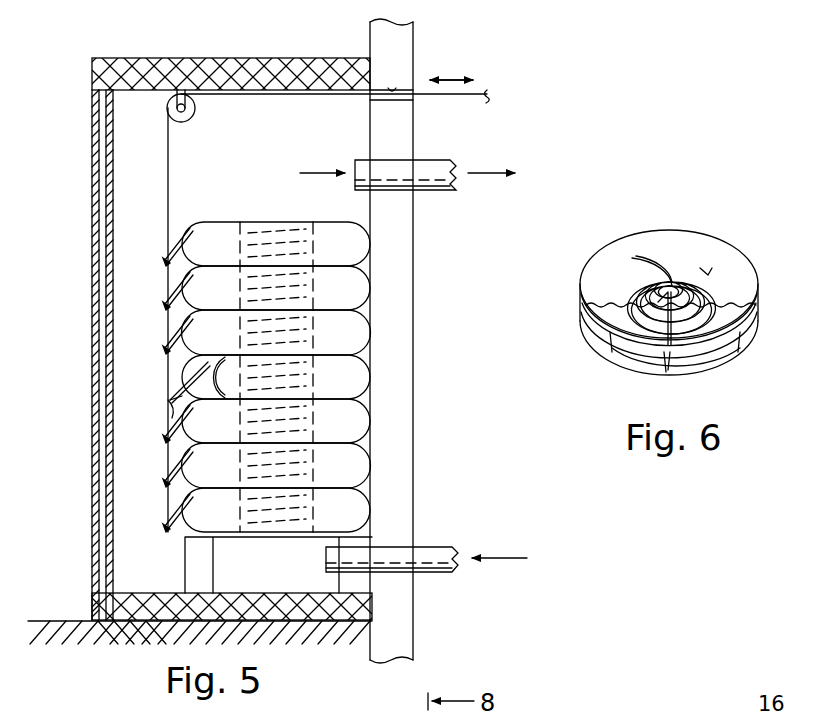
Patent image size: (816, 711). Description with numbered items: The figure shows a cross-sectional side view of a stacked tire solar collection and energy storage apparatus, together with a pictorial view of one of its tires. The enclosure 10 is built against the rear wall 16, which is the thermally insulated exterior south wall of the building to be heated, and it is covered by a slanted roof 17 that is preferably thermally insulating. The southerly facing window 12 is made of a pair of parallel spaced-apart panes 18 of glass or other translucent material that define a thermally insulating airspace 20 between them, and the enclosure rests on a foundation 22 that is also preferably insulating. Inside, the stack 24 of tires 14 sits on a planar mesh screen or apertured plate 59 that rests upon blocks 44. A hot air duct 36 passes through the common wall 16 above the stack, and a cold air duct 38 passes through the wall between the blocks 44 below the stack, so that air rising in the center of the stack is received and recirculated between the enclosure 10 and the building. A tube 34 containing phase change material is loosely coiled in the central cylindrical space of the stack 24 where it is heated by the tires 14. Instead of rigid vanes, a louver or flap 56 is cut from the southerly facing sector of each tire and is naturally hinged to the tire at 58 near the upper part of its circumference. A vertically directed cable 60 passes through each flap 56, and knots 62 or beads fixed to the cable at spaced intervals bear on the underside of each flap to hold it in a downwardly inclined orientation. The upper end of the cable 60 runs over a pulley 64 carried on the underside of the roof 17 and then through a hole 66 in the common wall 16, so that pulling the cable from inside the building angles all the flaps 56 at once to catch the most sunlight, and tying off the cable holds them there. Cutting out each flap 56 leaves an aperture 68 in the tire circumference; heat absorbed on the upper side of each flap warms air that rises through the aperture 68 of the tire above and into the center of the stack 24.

In FIG. 5, the enclosure 10 is at (200, 44).
In FIG. 5, the southerly facing window 12 is at (90, 298).
In FIG. 5, the tires 14 is at (371, 420).
In FIG. 6, the tires 14 is at (617, 252).
In FIG. 5, the rear wall 16 is at (394, 310).
In FIG. 5, the roof 17 is at (292, 72).
In FIG. 5, the panes 18 is at (110, 372).
In FIG. 5, the airspace 20 is at (104, 458).
In FIG. 5, the foundation 22 is at (112, 606).
In FIG. 5, the stack 24 is at (223, 218).
In FIG. 5, the tube 34 is at (276, 228).
In FIG. 6, the tube 34 is at (665, 270).
In FIG. 5, the hot air duct 36 is at (430, 168).
In FIG. 5, the cold air duct 38 is at (430, 553).
In FIG. 5, the blocks 44 is at (190, 571).
In FIG. 5, the flap 56 is at (172, 388).
In FIG. 6, the flap 56 is at (616, 340).
In FIG. 5, the hinge 58 is at (196, 362).
In FIG. 6, the hinge 58 is at (700, 335).
In FIG. 5, the apertured plate 59 is at (241, 538).
In FIG. 5, the cable 60 is at (167, 180).
In FIG. 6, the cable 60 is at (712, 270).
In FIG. 5, the knots 62 is at (172, 403).
In FIG. 6, the knots 62 is at (672, 362).
In FIG. 5, the pulley 64 is at (192, 114).
In FIG. 5, the hole 66 is at (396, 88).
In FIG. 5, the aperture 68 is at (173, 432).
In FIG. 6, the aperture 68 is at (643, 358).